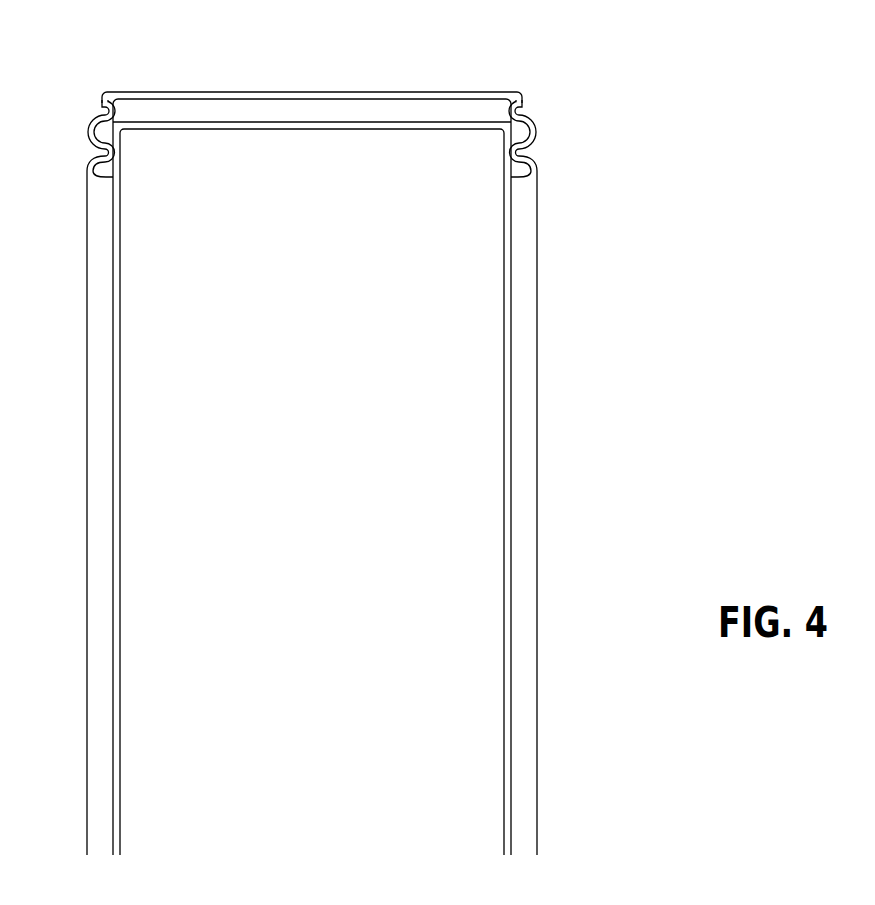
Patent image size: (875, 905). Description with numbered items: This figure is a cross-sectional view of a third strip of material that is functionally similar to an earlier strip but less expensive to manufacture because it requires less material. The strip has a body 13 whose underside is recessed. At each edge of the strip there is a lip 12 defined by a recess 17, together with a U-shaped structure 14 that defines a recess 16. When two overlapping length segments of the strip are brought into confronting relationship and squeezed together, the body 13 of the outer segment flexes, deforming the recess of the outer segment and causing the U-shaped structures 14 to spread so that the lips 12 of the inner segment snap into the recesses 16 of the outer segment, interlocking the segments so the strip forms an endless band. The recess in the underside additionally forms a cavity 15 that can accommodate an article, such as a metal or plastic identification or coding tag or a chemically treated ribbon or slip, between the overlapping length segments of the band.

The lip 12 is at (526, 89).
The body 13 is at (340, 93).
The U-shaped structure 14 is at (527, 177).
The cavity 15 is at (291, 108).
The recess 16 is at (505, 158).
The recess 17 is at (522, 110).